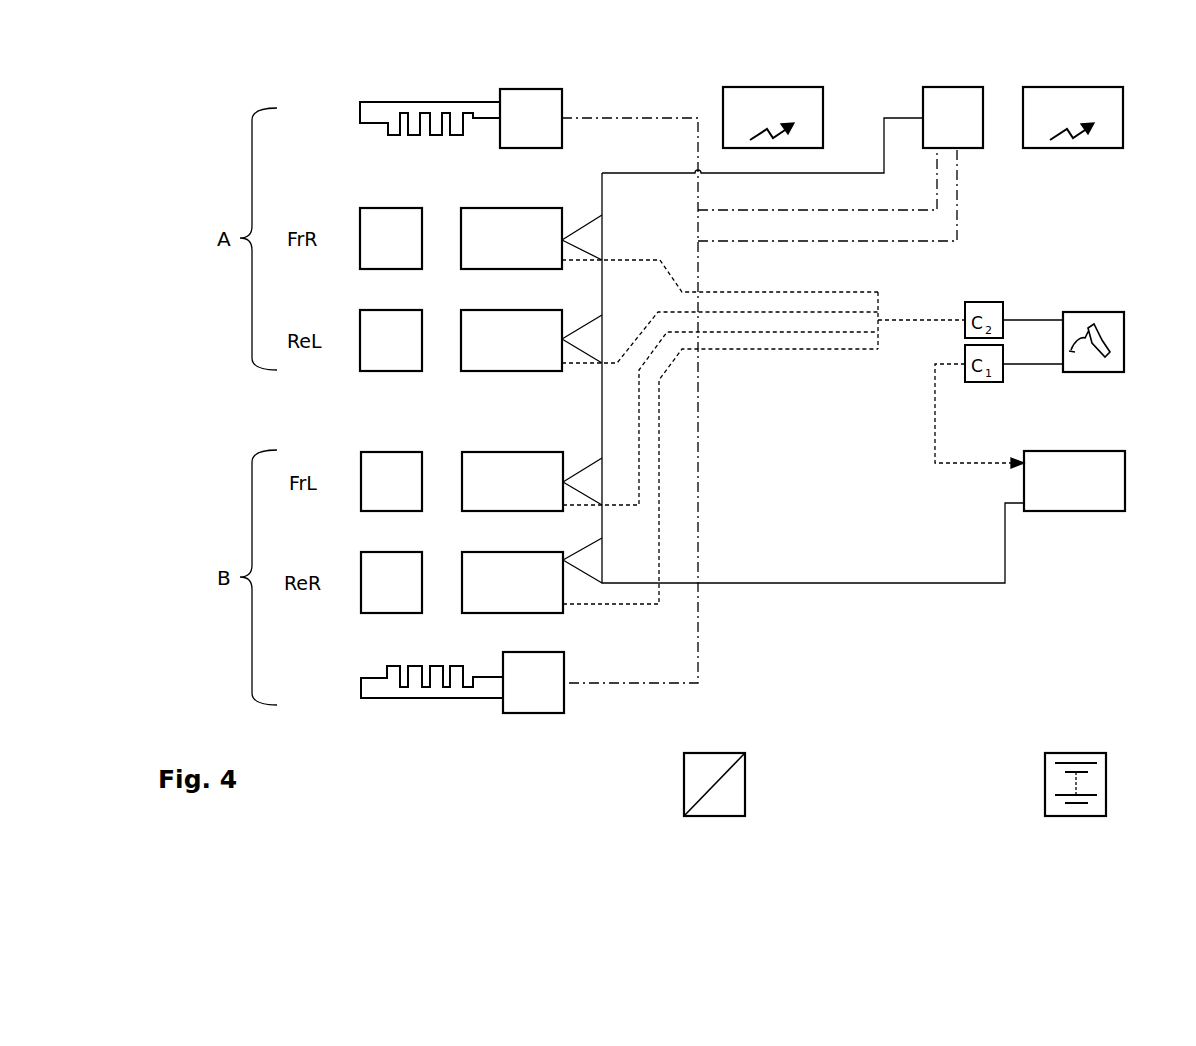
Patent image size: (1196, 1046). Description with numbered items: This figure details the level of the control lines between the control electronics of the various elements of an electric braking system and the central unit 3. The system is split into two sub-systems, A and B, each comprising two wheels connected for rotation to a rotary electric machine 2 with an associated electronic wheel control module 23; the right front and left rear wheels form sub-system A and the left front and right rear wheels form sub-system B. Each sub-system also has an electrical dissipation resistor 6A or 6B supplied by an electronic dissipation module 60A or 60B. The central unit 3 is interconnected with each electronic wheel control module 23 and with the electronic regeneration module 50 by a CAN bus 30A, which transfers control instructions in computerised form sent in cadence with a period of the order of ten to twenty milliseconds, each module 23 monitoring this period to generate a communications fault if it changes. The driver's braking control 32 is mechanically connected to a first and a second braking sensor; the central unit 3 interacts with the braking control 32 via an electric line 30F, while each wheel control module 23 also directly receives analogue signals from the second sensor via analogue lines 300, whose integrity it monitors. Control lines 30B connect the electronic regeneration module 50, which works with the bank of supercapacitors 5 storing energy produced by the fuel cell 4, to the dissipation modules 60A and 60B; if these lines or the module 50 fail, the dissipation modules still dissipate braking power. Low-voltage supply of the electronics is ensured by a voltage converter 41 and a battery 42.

The rotary electric machine 2 is at (384, 190).
The electronic wheel control module 23 is at (504, 190).
The central unit 3 is at (1125, 480).
The fuel cell 4 is at (770, 87).
The bank of supercapacitors 5 is at (1072, 87).
The electrical dissipation resistor 6A is at (443, 102).
The electrical dissipation resistor 6B is at (443, 698).
The electronic dissipation module 60A is at (528, 89).
The electronic dissipation module 60B is at (530, 713).
The electronic regeneration module 50 is at (952, 87).
The electric line (CAN bus) 30A is at (780, 588).
The control lines 30B is at (793, 212).
The electric line 30F is at (934, 405).
The analogue lines 300 is at (797, 350).
The braking control 32 is at (1124, 342).
The voltage converter 41 is at (745, 783).
The battery 42 is at (1106, 783).